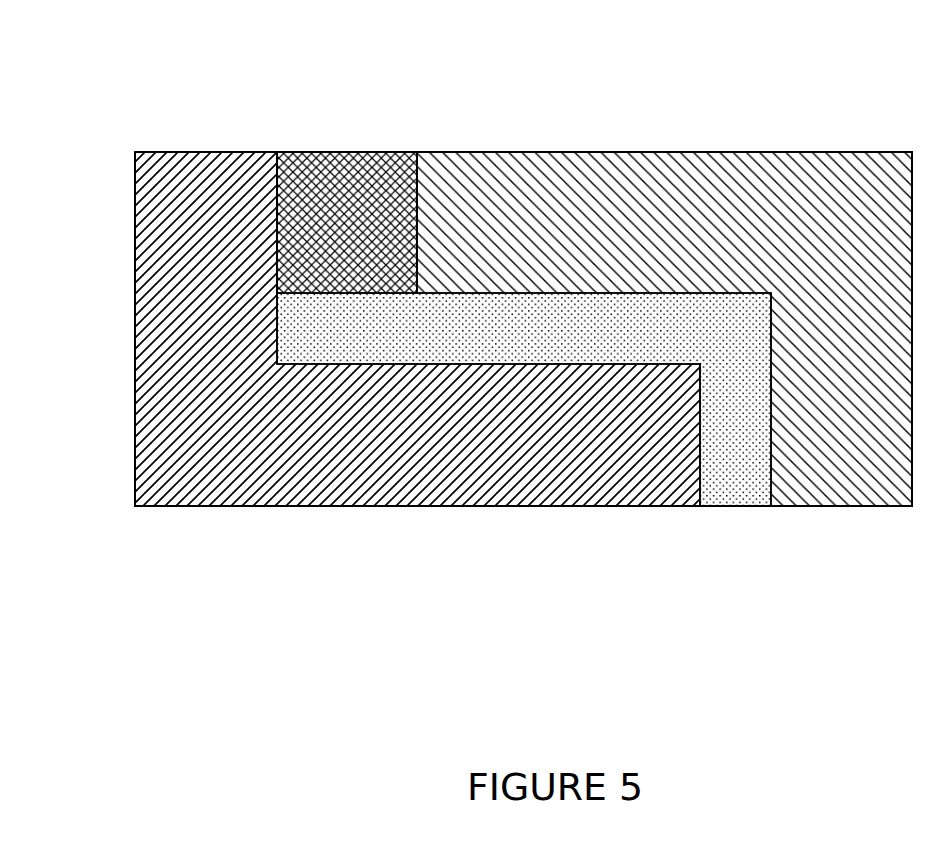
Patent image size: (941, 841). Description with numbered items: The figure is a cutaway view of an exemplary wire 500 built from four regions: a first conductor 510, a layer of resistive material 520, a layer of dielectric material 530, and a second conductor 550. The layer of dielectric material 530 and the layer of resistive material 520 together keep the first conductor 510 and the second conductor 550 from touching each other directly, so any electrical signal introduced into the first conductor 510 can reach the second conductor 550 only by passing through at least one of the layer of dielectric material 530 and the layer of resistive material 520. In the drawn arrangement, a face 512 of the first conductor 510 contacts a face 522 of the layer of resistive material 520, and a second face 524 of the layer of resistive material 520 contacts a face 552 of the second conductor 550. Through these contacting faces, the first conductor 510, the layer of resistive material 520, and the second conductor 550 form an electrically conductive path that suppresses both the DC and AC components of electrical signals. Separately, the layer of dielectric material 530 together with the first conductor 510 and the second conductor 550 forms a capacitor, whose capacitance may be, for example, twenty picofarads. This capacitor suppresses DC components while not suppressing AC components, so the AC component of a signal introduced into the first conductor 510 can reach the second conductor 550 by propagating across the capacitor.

The wire 500 is at (466, 275).
The first conductor 510 is at (143, 152).
The face of the first conductor 512 is at (275, 222).
The layer of resistive material 520 is at (318, 152).
The face of the layer of resistive material 522 is at (278, 184).
The second face of the layer of resistive material 524 is at (417, 193).
The layer of dielectric material 530 is at (725, 509).
The second conductor 550 is at (548, 152).
The face of the second conductor 552 is at (418, 166).